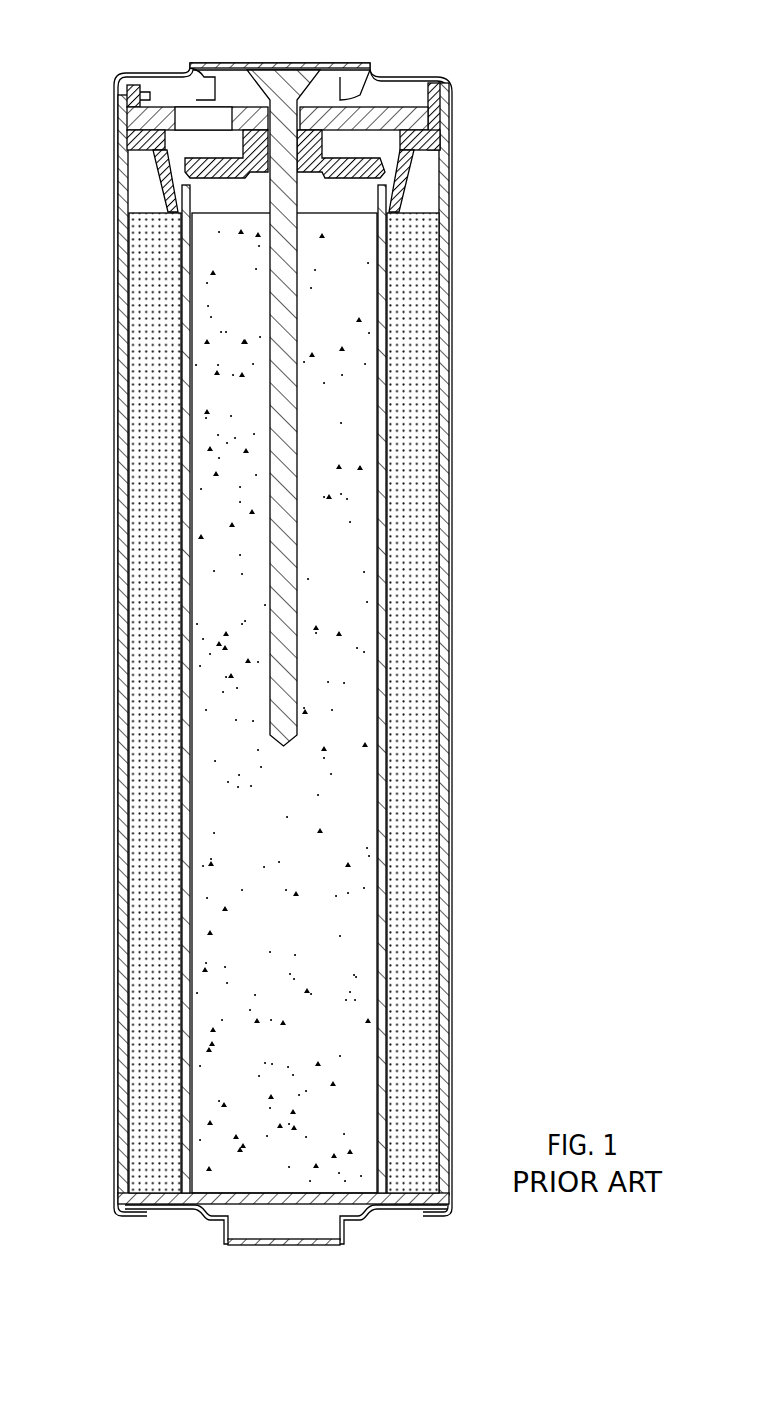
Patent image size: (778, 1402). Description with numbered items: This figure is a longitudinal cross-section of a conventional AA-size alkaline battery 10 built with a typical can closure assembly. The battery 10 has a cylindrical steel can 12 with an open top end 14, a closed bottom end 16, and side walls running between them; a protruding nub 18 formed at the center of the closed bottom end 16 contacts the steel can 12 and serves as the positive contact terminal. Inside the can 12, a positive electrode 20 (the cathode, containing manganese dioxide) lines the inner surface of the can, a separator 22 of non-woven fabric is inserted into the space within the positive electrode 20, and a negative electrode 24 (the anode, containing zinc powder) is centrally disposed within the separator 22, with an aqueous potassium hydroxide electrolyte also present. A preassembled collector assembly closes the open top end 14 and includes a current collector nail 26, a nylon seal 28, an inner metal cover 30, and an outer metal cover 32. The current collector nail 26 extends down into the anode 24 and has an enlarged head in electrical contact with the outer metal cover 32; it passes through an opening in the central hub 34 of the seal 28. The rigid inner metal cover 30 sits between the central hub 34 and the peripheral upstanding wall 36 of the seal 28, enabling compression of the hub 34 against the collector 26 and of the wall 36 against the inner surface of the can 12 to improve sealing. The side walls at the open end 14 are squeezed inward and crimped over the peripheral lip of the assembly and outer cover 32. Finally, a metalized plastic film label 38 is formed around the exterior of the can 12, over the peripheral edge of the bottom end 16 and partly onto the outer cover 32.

The alkaline battery 10 is at (540, 148).
The steel can 12 is at (445, 439).
The open top end 14 is at (432, 55).
The closed bottom end 16 is at (305, 1207).
The protruding nub 18 is at (265, 1244).
The positive electrode 20 is at (418, 778).
The separator 22 is at (385, 690).
The negative electrode 24 is at (355, 570).
The current collector nail 26 is at (300, 322).
The nylon seal 28 is at (405, 165).
The inner metal cover 30 is at (412, 118).
The outer metal cover 32 is at (312, 62).
The central hub 34 is at (247, 147).
The peripheral upstanding wall 36 is at (130, 120).
The label 38 is at (452, 895).